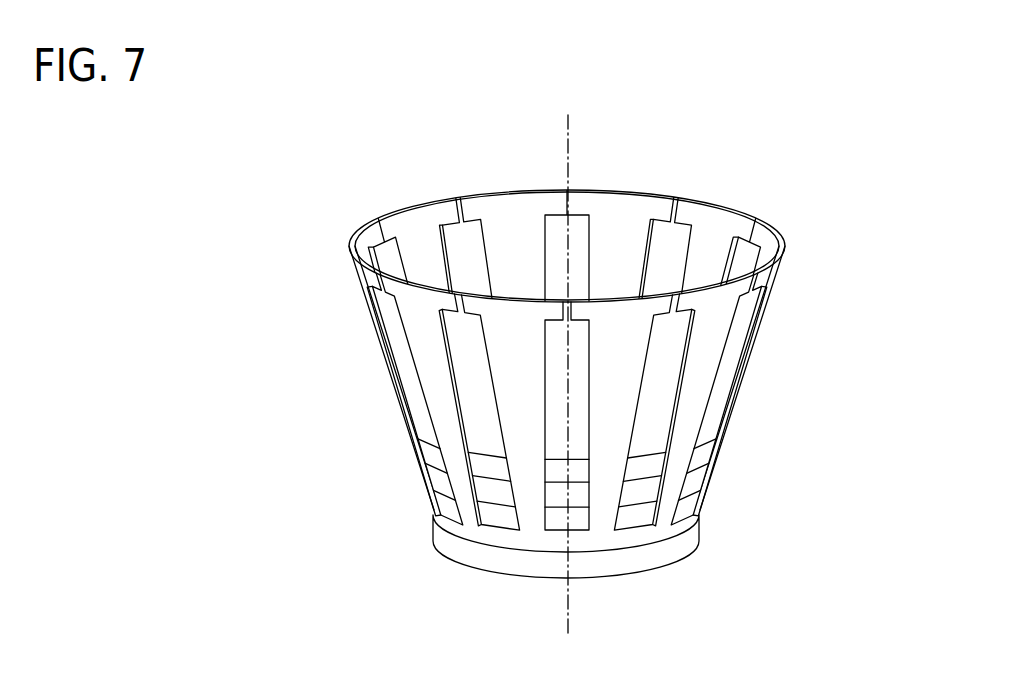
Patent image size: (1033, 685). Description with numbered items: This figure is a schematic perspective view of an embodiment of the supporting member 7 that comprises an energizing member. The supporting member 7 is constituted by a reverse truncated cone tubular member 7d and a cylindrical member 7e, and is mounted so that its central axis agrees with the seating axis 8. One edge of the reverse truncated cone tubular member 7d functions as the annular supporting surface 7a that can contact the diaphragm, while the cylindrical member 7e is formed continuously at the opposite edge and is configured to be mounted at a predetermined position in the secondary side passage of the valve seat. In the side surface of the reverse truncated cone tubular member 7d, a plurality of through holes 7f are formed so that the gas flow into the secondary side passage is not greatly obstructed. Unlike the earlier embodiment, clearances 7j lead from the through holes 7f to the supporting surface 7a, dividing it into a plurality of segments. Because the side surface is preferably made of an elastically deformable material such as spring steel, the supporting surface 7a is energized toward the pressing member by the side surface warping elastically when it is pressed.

The supporting member 7 is at (572, 374).
The supporting surface 7a is at (779, 237).
The reverse truncated cone tubular member 7d is at (499, 330).
The cylindrical member 7e is at (434, 533).
The through holes 7f is at (580, 427).
The clearances 7j is at (678, 193).
The seating axis 8 is at (565, 606).